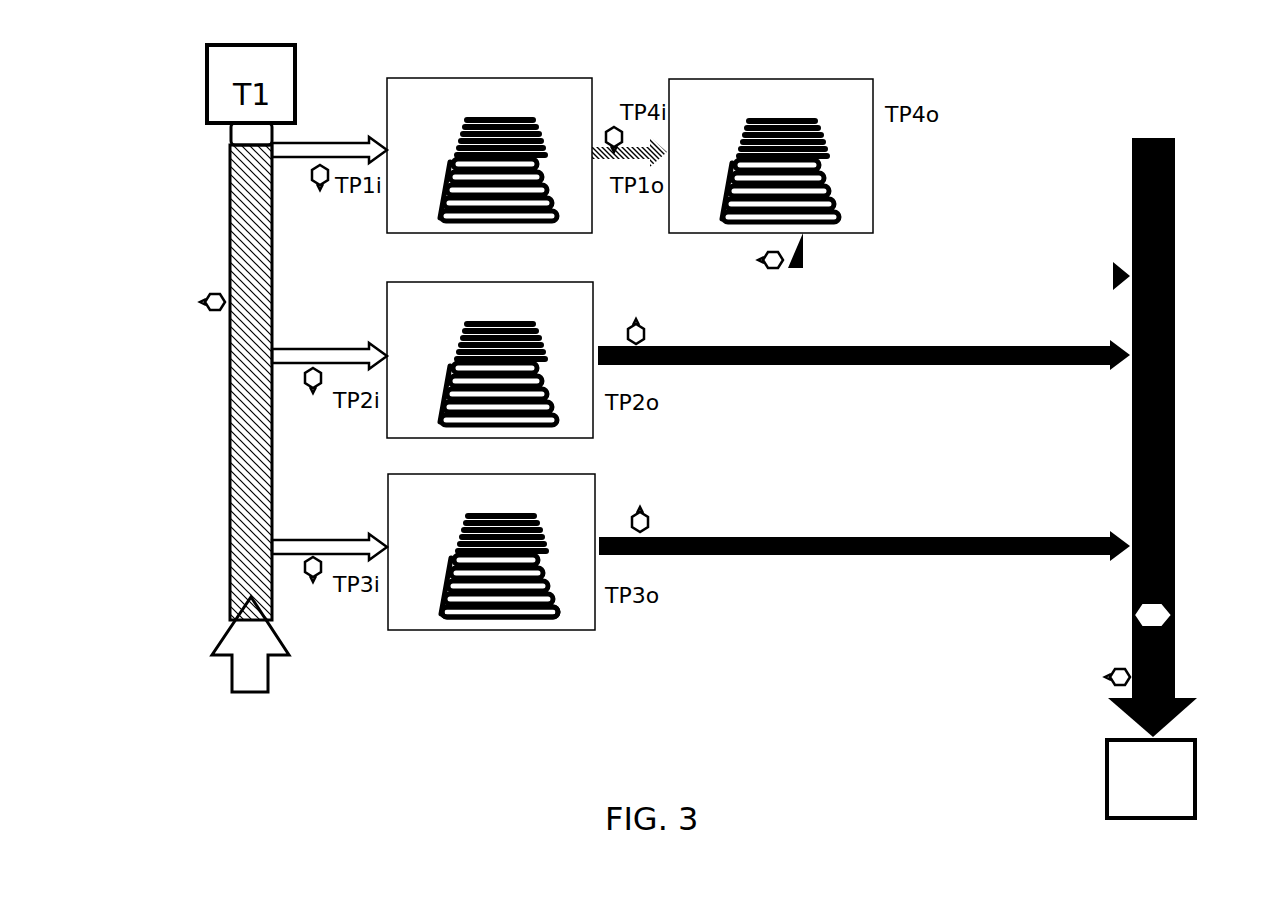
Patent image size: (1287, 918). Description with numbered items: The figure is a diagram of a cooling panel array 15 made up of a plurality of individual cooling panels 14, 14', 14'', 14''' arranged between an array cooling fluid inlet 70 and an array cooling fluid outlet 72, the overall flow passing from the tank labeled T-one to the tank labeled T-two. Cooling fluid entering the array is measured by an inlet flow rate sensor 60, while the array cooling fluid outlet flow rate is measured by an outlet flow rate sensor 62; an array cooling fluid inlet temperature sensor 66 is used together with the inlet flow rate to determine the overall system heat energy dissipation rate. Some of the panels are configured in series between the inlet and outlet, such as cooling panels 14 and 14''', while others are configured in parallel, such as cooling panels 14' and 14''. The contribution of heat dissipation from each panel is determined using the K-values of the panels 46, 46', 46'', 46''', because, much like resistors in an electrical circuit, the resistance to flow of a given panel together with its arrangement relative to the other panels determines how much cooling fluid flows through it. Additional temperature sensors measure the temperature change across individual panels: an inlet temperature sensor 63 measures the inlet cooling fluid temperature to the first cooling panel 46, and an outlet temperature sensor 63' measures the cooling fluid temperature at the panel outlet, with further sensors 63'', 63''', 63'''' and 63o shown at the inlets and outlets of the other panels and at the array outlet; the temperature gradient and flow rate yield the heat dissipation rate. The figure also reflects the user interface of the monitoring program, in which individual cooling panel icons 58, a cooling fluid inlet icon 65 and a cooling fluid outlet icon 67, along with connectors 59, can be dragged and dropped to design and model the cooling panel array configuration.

The cooling panel 14 is at (519, 117).
The cooling panel 14' is at (553, 336).
The cooling panel 14'' is at (556, 531).
The cooling panel 14''' is at (832, 126).
The cooling panel array 15 is at (1163, 133).
The first cooling panel 46 is at (489, 125).
The cooling panel 46' is at (490, 341).
The cooling panel 46'' is at (491, 537).
The cooling panel 46''' is at (771, 125).
The cooling panel icon 58 is at (490, 585).
The connector 59 is at (805, 560).
The inlet flow rate sensor 60 is at (228, 135).
The outlet flow rate sensor 62 is at (1132, 612).
The inlet temperature sensor 63 is at (333, 217).
The outlet temperature sensor 63' is at (630, 99).
The temperature sensor 63'' is at (785, 288).
The temperature sensor 63''' is at (342, 414).
The temperature sensor 63'''' is at (685, 321).
The outlet temperature sensor 63o is at (1108, 674).
The cooling fluid inlet icon 65 is at (230, 238).
The array cooling fluid inlet temperature sensor 66 is at (210, 312).
The cooling fluid outlet icon 67 is at (1130, 724).
The array cooling fluid inlet 70 is at (232, 614).
The array cooling fluid outlet 72 is at (1197, 705).